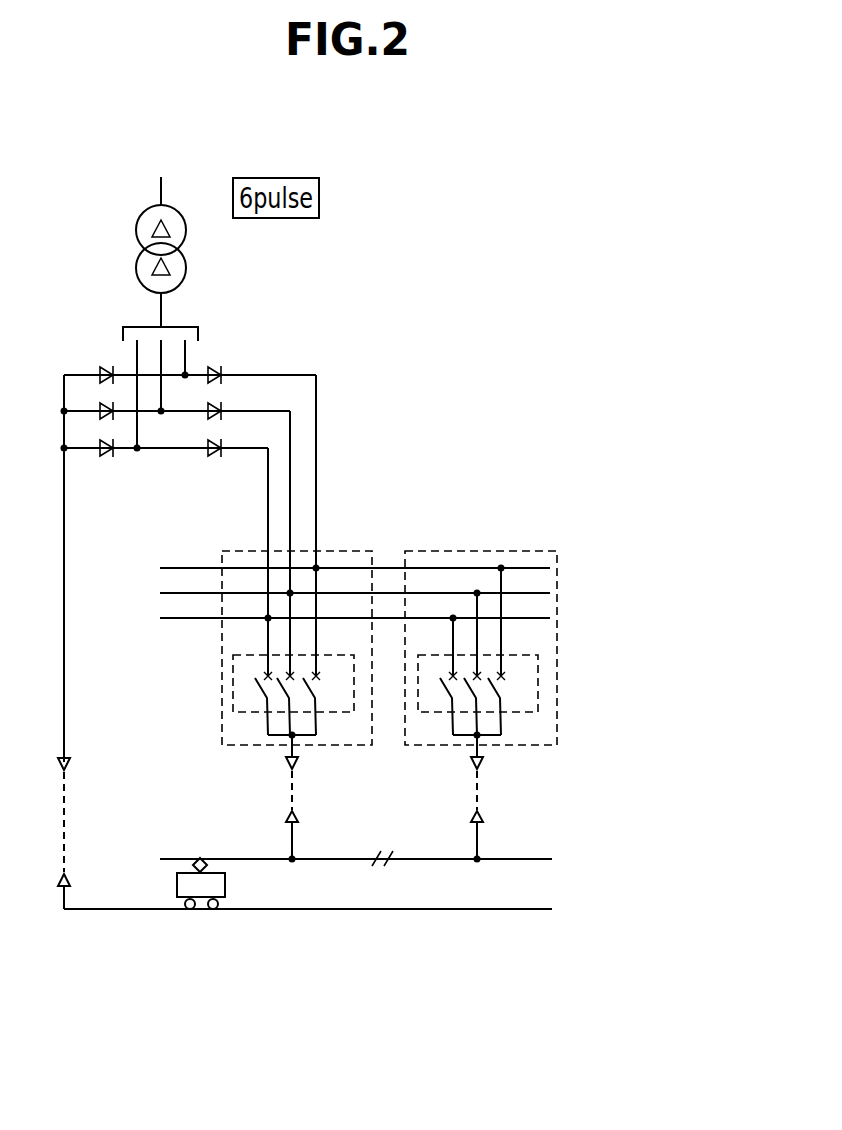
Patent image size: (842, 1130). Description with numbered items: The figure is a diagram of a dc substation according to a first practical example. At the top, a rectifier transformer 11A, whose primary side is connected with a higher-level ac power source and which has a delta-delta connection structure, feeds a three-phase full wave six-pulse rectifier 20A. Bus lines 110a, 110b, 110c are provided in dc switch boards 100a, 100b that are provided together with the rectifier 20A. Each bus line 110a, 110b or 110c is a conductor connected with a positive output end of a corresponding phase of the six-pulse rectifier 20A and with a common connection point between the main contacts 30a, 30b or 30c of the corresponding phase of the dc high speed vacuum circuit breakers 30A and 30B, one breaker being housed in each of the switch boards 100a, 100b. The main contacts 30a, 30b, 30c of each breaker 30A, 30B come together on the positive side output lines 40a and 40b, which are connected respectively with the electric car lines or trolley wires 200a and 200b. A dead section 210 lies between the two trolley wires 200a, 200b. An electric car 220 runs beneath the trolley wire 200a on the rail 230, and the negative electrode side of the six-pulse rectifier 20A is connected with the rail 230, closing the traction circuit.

The rectifier transformer 11A is at (140, 250).
The six-pulse rectifier 20A is at (210, 354).
The dc switch board 100a is at (236, 546).
The dc switch board 100b is at (544, 547).
The bus line 110a is at (175, 568).
The bus line 110b is at (172, 593).
The bus line 110c is at (175, 618).
The dc high speed vacuum circuit breaker 30A is at (233, 665).
The dc high speed vacuum circuit breaker 30B is at (538, 688).
The main contact 30a is at (315, 694).
The main contact 30b is at (291, 694).
The main contact 30c is at (258, 684).
The positive side output line 40a is at (287, 738).
The positive side output line 40b is at (478, 737).
The electric car line 200a is at (245, 858).
The electric car line 200b is at (525, 858).
The dead section 210 is at (374, 862).
The electric car 220 is at (180, 888).
The rail 230 is at (419, 911).